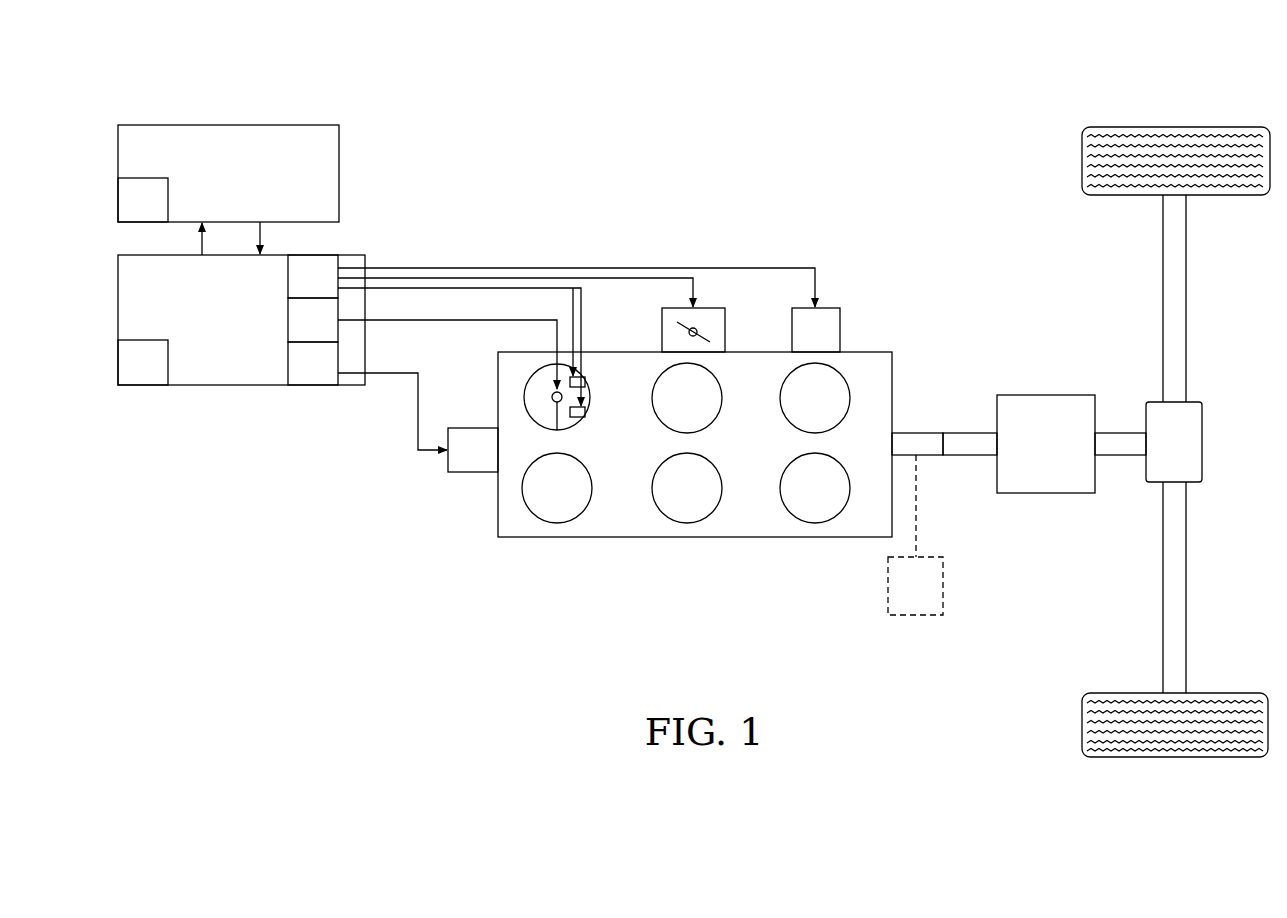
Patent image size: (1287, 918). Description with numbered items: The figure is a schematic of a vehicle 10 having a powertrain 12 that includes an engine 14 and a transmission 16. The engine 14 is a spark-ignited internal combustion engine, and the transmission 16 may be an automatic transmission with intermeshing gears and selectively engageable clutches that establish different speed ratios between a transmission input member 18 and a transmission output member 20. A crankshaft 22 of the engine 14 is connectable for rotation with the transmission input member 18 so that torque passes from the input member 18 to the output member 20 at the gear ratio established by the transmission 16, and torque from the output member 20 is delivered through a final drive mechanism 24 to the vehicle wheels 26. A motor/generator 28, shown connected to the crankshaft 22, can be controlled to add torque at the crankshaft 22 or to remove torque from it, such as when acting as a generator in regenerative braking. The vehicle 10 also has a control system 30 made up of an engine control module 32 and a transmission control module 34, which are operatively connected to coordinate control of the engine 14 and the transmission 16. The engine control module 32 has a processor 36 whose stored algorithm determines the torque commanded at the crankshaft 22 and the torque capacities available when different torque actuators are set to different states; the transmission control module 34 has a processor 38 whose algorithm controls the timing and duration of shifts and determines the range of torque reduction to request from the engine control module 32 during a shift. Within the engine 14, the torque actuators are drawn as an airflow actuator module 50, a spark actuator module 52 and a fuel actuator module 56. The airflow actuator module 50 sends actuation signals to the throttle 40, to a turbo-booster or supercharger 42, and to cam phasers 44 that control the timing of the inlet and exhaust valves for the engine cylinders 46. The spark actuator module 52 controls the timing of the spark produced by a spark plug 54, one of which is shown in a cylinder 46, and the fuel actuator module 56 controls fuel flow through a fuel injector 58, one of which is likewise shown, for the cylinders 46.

The vehicle 10 is at (970, 76).
The powertrain 12 is at (669, 555).
The engine 14 is at (741, 453).
The transmission 16 is at (1034, 453).
The transmission input member 18 is at (970, 430).
The transmission output member 20 is at (1120, 430).
The crankshaft 22 is at (906, 430).
The final drive mechanism 24 is at (1192, 402).
The vehicle wheels 26 is at (1176, 127).
The motor/generator 28 is at (904, 595).
The control system 30 is at (199, 410).
The engine control module 32 is at (216, 333).
The transmission control module 34 is at (236, 188).
The processor 36 is at (131, 376).
The processor 38 is at (131, 213).
The throttle 40 is at (725, 330).
The turbo-booster or supercharger 42 is at (804, 343).
The cam phasers 44 is at (586, 382).
The engine cylinders 46 is at (526, 409).
The airflow actuator module 50 is at (301, 288).
The spark actuator module 52 is at (301, 332).
The spark plug 54 is at (566, 428).
The fuel actuator module 56 is at (301, 376).
The fuel injector 58 is at (461, 462).